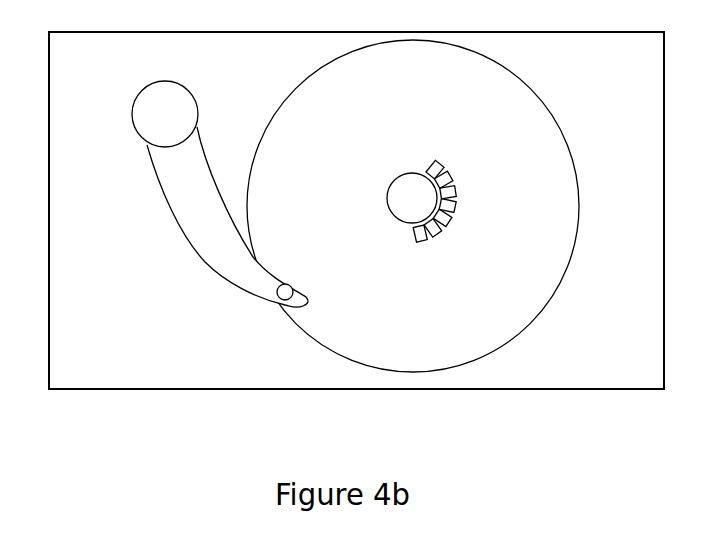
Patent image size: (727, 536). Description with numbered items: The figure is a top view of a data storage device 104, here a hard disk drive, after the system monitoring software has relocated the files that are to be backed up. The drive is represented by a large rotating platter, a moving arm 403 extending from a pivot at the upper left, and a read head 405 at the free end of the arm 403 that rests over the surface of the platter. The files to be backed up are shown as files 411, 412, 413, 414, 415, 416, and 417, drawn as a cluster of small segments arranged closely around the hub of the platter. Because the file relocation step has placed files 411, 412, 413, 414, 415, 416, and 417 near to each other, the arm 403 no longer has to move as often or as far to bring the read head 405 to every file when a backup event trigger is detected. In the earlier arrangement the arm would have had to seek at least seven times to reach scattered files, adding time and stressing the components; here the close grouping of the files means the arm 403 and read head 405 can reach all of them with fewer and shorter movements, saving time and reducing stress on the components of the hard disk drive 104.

The data storage device 104 is at (649, 65).
The moving arm 403 is at (176, 196).
The read head 405 is at (285, 304).
The file 411 is at (443, 157).
The file 412 is at (458, 173).
The file 413 is at (469, 187).
The file 414 is at (467, 208).
The file 415 is at (459, 235).
The file 416 is at (441, 248).
The file 417 is at (421, 257).